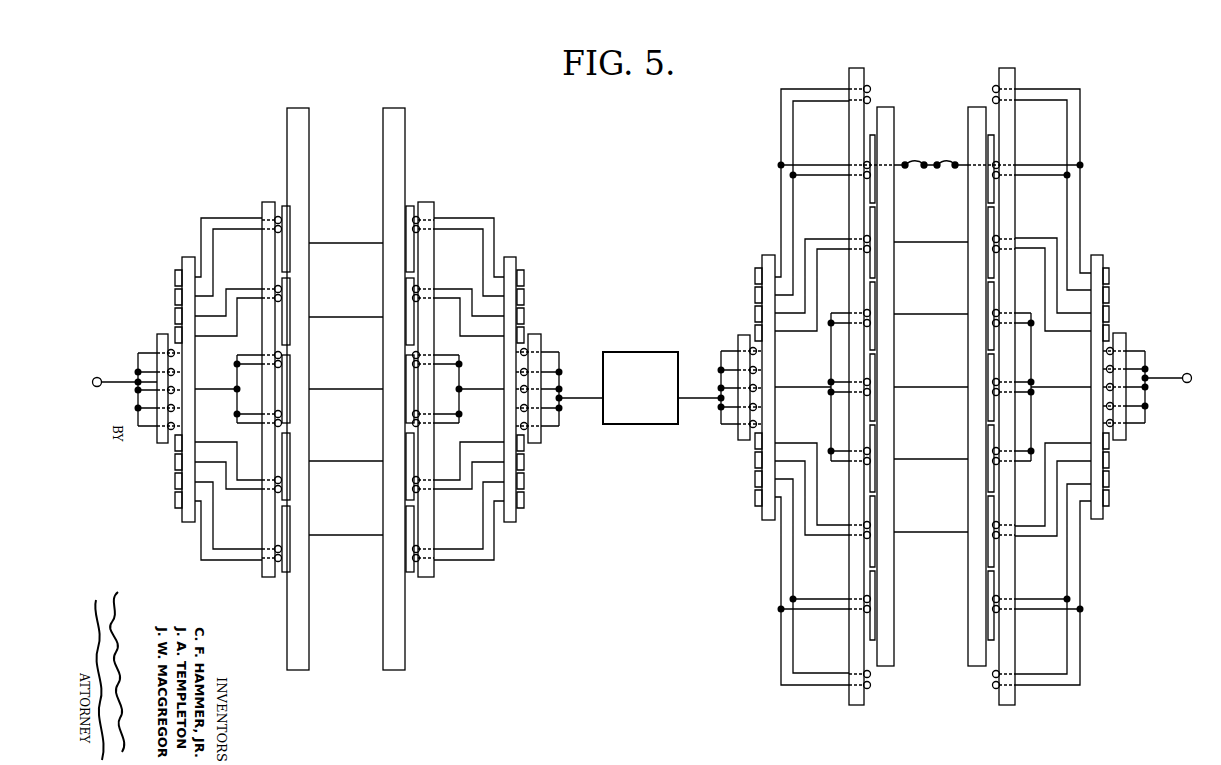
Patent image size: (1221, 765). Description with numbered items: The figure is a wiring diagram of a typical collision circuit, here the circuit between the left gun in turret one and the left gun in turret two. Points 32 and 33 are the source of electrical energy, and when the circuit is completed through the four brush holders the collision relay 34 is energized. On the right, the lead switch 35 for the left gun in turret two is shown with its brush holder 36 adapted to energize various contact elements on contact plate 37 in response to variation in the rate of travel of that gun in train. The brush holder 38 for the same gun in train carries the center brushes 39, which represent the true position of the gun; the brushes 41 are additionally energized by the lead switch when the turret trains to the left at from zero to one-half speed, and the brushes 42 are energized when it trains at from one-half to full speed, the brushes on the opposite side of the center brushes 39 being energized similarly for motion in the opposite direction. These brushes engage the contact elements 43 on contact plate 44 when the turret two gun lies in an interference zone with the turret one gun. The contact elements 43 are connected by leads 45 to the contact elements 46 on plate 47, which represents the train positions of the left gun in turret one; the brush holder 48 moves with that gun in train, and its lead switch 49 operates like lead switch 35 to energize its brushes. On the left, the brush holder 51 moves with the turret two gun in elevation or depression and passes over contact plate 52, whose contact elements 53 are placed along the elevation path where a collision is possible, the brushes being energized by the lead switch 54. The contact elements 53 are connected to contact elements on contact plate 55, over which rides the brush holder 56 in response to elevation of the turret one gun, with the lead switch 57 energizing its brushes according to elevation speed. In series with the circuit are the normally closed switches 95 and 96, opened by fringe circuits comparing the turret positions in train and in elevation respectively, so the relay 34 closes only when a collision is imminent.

The point 32 is at (1189, 383).
The point 33 is at (98, 387).
The collision relay 34 is at (632, 424).
The lead switch 35 is at (1112, 453).
The brush holder 36 is at (1118, 333).
The contact plate 37 is at (1098, 519).
The brush holder 38 is at (1013, 704).
The center brushes 39 is at (993, 323).
The brushes 41 is at (993, 241).
The brushes 42 is at (993, 87).
The contact elements 43 is at (993, 642).
The contact plate 44 is at (972, 665).
The leads 45 is at (937, 242).
The contact elements 46 is at (875, 642).
The contact plate 47 is at (895, 665).
The brush holder 48 is at (857, 704).
The lead switch 49 is at (753, 445).
The brush holder 51 is at (436, 573).
The contact plate 52 is at (400, 670).
The contact elements 53 is at (408, 573).
The lead switch 54 is at (527, 447).
The contact plate 55 is at (295, 670).
The brush holder 56 is at (266, 577).
The lead switch 57 is at (155, 429).
The switch 95 is at (941, 168).
The switch 96 is at (913, 168).